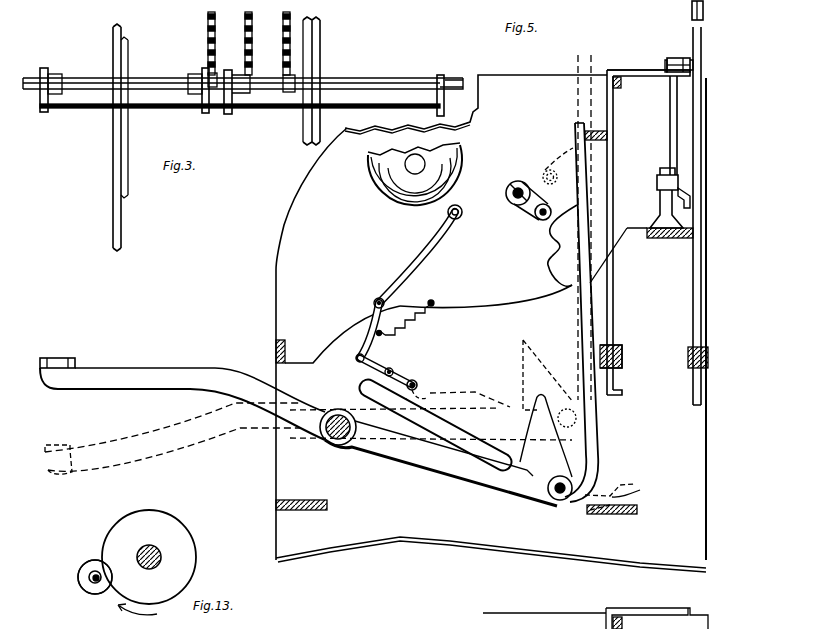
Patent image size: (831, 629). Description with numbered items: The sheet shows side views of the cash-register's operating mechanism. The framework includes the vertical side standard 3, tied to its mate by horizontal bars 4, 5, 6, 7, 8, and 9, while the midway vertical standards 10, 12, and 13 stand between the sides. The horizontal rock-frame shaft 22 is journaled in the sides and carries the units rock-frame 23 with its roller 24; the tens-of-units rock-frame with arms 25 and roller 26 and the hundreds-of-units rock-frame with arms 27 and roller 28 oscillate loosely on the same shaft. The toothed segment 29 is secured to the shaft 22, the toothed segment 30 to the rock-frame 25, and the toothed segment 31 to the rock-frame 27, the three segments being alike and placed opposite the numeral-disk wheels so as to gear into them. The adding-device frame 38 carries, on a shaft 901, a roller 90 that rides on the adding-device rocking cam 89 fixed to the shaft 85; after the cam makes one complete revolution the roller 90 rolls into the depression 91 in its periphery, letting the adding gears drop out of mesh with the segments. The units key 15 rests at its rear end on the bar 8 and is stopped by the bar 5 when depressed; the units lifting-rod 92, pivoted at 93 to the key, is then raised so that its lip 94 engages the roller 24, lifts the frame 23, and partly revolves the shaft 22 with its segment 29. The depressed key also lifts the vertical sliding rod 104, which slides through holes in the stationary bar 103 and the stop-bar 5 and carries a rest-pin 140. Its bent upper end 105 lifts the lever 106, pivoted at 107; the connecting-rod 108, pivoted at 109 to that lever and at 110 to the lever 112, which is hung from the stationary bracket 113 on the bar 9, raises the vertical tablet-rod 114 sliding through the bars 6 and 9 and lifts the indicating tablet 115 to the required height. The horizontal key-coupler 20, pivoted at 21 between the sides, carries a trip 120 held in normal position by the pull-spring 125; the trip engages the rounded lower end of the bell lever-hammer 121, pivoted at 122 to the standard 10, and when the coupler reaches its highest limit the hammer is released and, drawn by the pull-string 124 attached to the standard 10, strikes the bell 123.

In FIG. 5, the vertical side standard 3 is at (706, 82).
In FIG. 5, the horizontal bar 4 is at (276, 354).
In FIG. 5, the horizontal stop-bar 5 is at (622, 358).
In FIG. 5, the horizontal bar 6 is at (708, 357).
In FIG. 5, the horizontal bar 7 is at (276, 505).
In FIG. 5, the horizontal bar 8 is at (637, 508).
In FIG. 5, the horizontal bar 9 is at (693, 235).
In FIG. 5, the stationary midway vertical standard 10 is at (498, 79).
In FIG. 3, the stationary midway vertical standard 12 is at (320, 56).
In FIG. 3, the stationary midway vertical standard 13 is at (113, 62).
In FIG. 5, the units operating-key 15 is at (100, 378).
In FIG. 5, the horizontal key-coupler 20 is at (466, 398).
In FIG. 5, the coupler pivot 21 is at (358, 383).
In FIG. 3, the horizontal rock-frame shaft 22 is at (33, 78).
In FIG. 5, the horizontal rock-frame shaft 22 is at (518, 186).
In FIG. 5, the units rock-frame 23 is at (506, 193).
In FIG. 5, the horizontal roller 24 is at (540, 216).
In FIG. 3, the tens-of-units rock-frame arms 25 is at (228, 72).
In FIG. 3, the horizontal roller 26 is at (269, 110).
In FIG. 3, the hundreds-of-units rock-frame arms 27 is at (72, 78).
In FIG. 3, the roller 28 is at (81, 109).
In FIG. 3, the toothed segment 29 is at (283, 16).
In FIG. 3, the toothed segment 30 is at (245, 16).
In FIG. 3, the toothed segment 31 is at (208, 16).
In FIG. 3, the adding-device frame 38 is at (128, 136).
In FIG. 13, the shaft 85 is at (150, 545).
In FIG. 13, the adding-device rocking cam 89 is at (128, 525).
In FIG. 13, the roller 90 is at (78, 577).
In FIG. 13, the depression 91 is at (103, 560).
In FIG. 13, the roller shaft 901 is at (89, 583).
In FIG. 5, the units lifting-rod 92 is at (574, 287).
In FIG. 5, the lifting-rod pivot 93 is at (558, 501).
In FIG. 5, the lip 94 is at (546, 251).
In FIG. 5, the horizontal stationary bar 103 is at (607, 135).
In FIG. 5, the vertical sliding rod 104 is at (613, 108).
In FIG. 5, the bent upper end 105 is at (645, 67).
In FIG. 5, the lever 106 is at (672, 58).
In FIG. 5, the lever pivot 107 is at (688, 56).
In FIG. 5, the connecting-rod 108 is at (677, 130).
In FIG. 5, the pivotal connection 109 is at (666, 60).
In FIG. 5, the pivotal connection 110 is at (657, 188).
In FIG. 5, the lever 112 is at (690, 193).
In FIG. 5, the stationary bracket 113 is at (660, 206).
In FIG. 5, the vertical tablet-rod 114 is at (701, 62).
In FIG. 5, the tablet 115 is at (692, 12).
In FIG. 5, the trip 120 is at (356, 360).
In FIG. 5, the bell lever-hammer 121 is at (426, 232).
In FIG. 5, the hammer pivot 122 is at (374, 303).
In FIG. 5, the bell 123 is at (378, 181).
In FIG. 5, the pull-string 124 is at (406, 325).
In FIG. 5, the pull-spring 125 is at (430, 390).
In FIG. 5, the rest-pin 140 is at (623, 345).